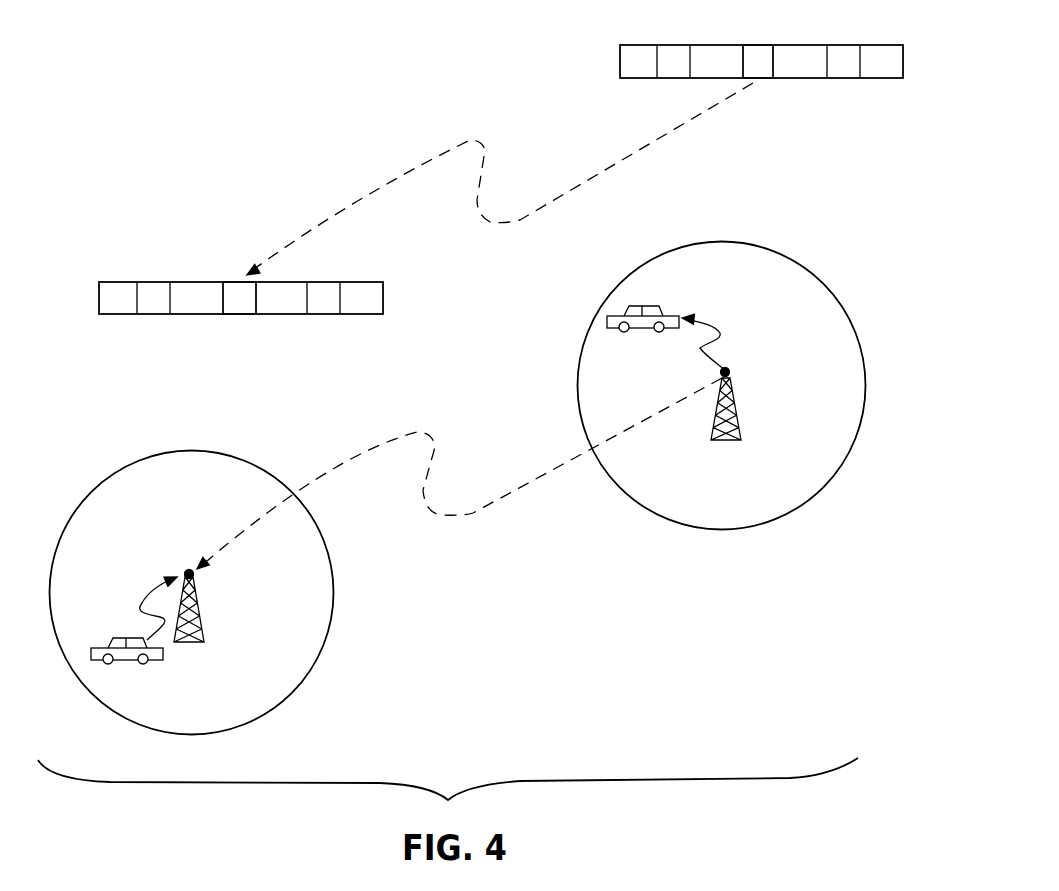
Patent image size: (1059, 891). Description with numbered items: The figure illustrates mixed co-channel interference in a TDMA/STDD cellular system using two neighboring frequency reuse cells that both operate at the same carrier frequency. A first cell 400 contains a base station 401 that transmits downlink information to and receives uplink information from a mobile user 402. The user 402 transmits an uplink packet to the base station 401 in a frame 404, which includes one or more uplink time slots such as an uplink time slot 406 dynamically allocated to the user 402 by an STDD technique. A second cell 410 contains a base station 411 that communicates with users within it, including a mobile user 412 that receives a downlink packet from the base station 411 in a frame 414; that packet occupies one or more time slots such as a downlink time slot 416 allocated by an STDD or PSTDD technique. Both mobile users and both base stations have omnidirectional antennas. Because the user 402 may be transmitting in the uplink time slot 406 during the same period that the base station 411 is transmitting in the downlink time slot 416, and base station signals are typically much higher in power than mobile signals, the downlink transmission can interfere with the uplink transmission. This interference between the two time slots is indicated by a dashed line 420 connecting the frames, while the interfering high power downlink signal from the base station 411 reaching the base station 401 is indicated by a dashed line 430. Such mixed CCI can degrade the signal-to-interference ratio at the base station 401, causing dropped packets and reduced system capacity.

The first cell 400 is at (118, 475).
The base station 401 is at (186, 569).
The mobile user 402 is at (163, 655).
The frame 404 is at (99, 297).
The uplink time slot 406 is at (230, 283).
The second cell 410 is at (647, 268).
The base station 411 is at (732, 372).
The mobile user 412 is at (640, 330).
The frame 414 is at (620, 61).
The downlink time slot 416 is at (768, 52).
The dashed line 420 is at (507, 222).
The dashed line 430 is at (470, 516).